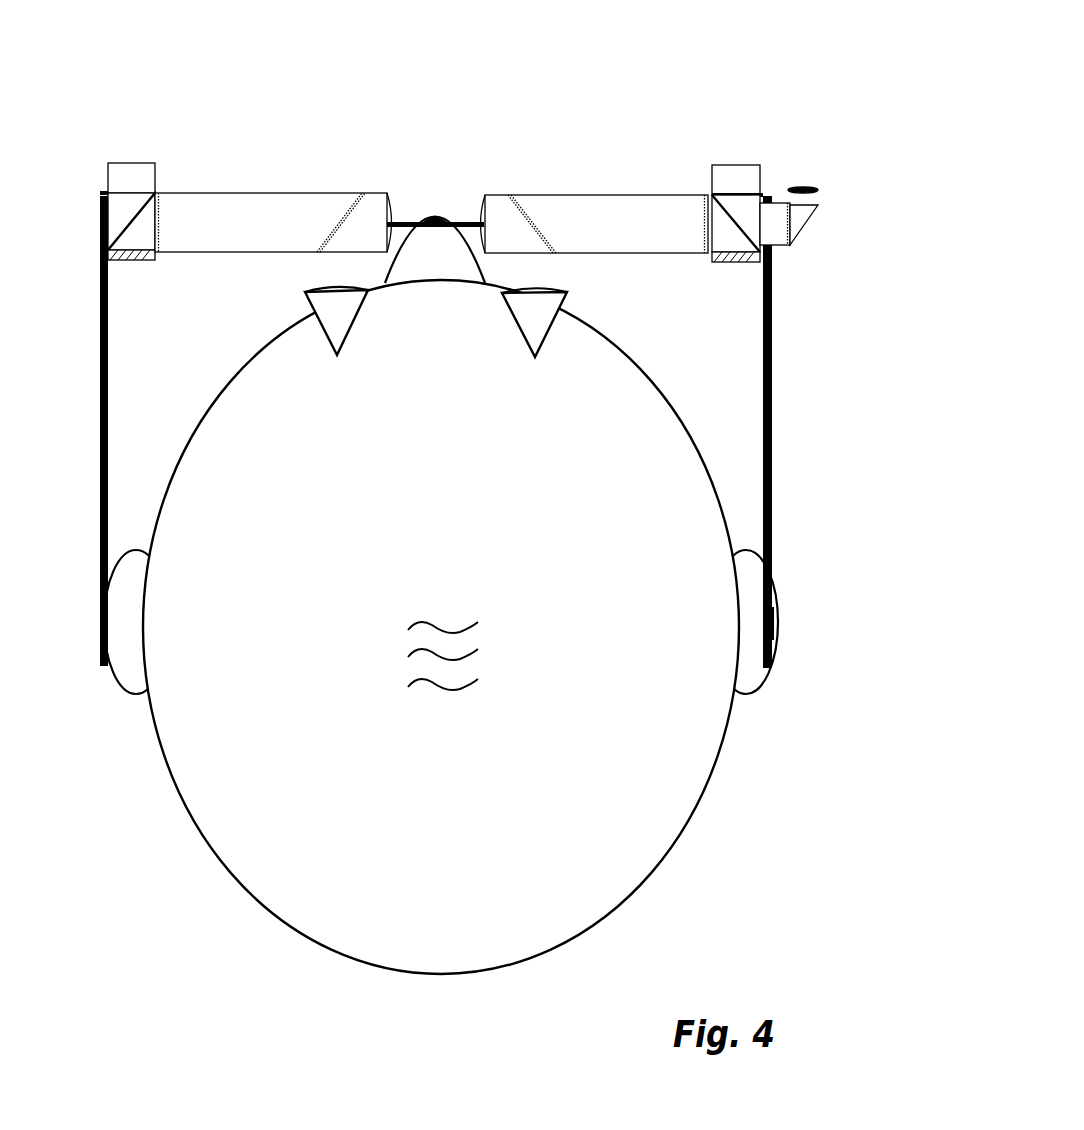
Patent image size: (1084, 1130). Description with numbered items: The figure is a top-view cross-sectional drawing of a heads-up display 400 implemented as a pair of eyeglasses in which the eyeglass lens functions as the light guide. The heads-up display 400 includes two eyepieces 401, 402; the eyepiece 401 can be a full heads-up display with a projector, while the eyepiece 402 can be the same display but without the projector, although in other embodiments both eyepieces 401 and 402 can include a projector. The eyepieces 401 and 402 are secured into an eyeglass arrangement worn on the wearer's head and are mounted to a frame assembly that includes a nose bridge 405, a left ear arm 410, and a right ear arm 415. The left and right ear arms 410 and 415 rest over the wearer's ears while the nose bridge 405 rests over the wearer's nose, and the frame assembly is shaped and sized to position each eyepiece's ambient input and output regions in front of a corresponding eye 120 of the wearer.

The heads-up display 400 is at (673, 44).
The eyepiece 401 is at (608, 165).
The eyepiece 402 is at (241, 170).
The nose bridge 405 is at (465, 220).
The left ear arm 410 is at (101, 412).
The right ear arm 415 is at (772, 395).
The eye 120 is at (339, 357).